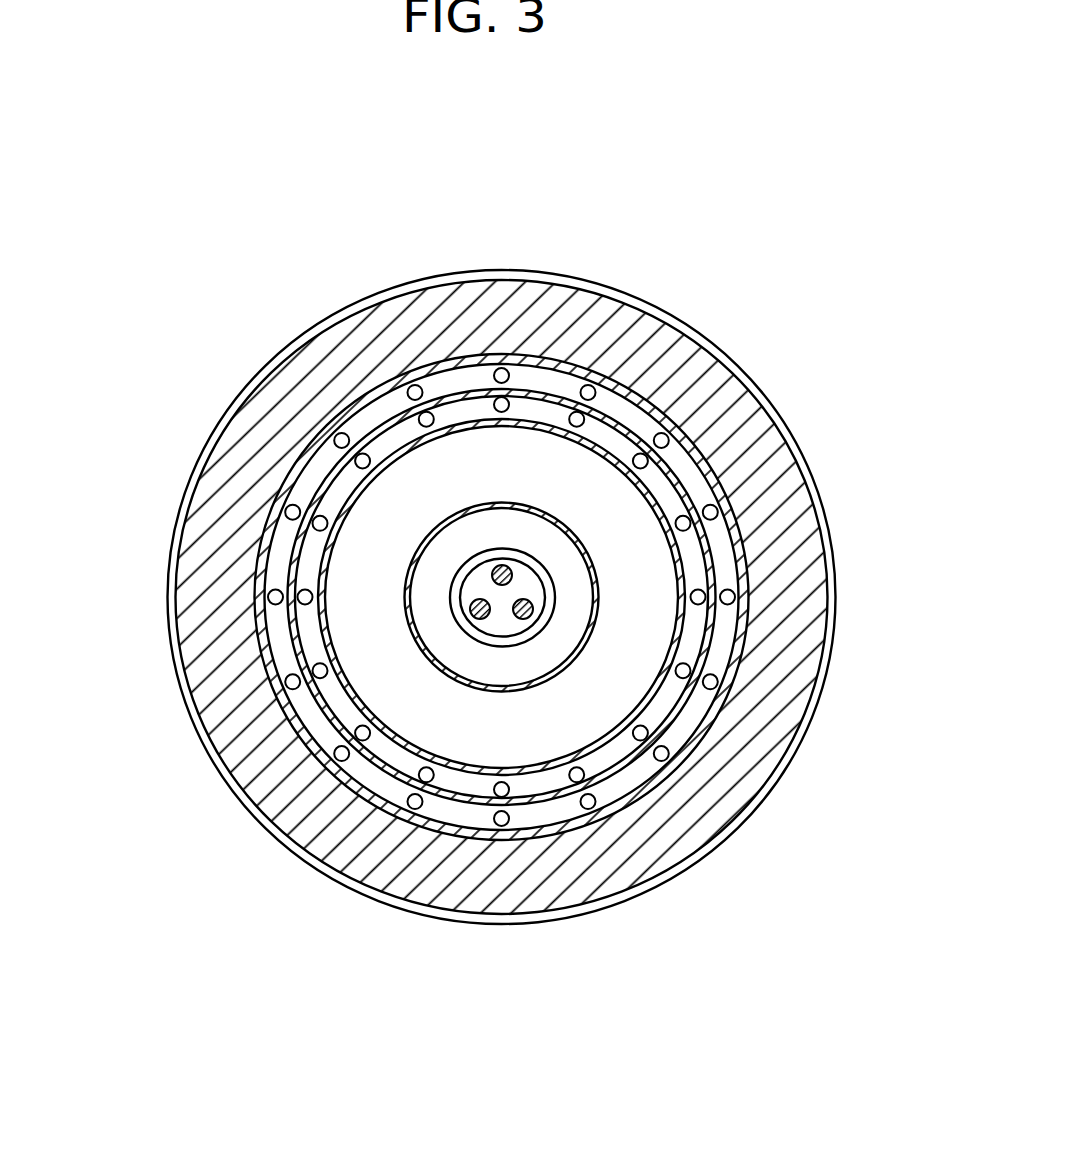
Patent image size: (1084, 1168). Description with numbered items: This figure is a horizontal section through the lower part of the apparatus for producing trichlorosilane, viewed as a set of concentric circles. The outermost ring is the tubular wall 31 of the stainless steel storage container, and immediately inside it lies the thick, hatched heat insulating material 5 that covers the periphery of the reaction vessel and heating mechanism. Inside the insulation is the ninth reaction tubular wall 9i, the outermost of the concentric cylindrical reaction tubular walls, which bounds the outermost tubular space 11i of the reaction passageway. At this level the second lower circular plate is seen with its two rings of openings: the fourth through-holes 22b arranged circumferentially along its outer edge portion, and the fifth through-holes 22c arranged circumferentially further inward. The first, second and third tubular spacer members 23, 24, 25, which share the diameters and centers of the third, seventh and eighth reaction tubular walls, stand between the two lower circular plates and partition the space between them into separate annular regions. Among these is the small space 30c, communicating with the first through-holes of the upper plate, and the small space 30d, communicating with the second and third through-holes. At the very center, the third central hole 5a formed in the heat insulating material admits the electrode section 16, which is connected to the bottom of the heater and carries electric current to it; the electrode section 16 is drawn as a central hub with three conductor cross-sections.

The tubular wall 31 is at (704, 322).
The heat insulating material 5 is at (740, 420).
The ninth reaction tubular wall 9i is at (740, 557).
The tubular space 11i is at (313, 470).
The fourth through-holes 22b is at (408, 388).
The fifth through-holes 22c is at (515, 407).
The third tubular spacer member 25 is at (723, 622).
The small space 30c is at (308, 617).
The second tubular spacer member 24 is at (577, 713).
The small space 30d is at (577, 713).
The first tubular spacer member 23 is at (484, 505).
The third central hole 5a is at (480, 585).
The electrode section 16 is at (478, 616).